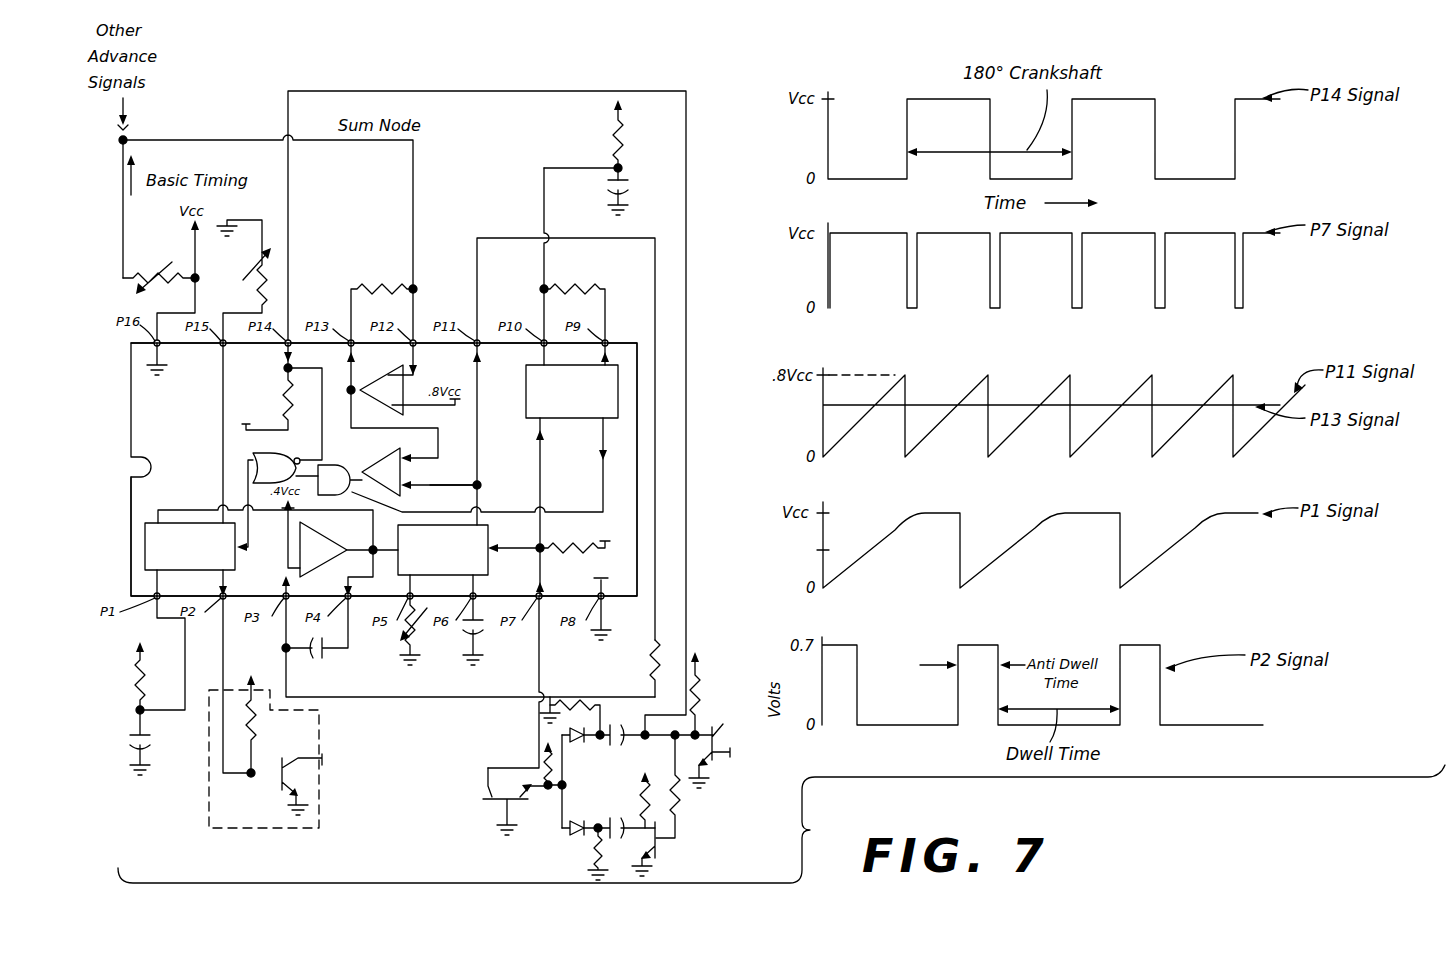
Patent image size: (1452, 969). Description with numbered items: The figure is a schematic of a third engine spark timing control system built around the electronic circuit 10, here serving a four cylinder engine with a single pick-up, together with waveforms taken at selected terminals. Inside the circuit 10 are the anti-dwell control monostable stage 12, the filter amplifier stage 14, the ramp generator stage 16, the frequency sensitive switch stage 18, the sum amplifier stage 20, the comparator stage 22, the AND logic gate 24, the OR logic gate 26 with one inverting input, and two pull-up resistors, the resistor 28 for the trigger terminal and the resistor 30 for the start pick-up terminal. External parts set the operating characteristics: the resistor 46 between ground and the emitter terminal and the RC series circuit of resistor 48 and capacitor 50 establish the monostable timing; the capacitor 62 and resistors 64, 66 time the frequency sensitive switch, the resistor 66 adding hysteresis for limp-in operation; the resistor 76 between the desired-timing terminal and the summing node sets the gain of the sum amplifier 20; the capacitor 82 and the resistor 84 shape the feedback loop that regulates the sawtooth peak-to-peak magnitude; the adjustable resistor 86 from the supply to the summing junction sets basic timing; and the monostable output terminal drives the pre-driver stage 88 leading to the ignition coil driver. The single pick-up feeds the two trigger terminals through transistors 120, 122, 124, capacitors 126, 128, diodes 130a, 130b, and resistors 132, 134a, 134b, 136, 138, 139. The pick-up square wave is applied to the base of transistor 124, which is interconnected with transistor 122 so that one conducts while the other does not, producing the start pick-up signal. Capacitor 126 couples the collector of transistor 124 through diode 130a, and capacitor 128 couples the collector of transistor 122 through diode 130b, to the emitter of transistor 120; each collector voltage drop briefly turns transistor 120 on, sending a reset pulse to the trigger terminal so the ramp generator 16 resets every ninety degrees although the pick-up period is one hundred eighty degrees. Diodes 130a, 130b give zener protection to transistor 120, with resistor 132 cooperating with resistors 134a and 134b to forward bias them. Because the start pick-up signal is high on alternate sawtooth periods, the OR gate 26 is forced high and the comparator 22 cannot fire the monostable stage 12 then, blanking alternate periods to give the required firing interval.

The electronic circuit 10 is at (131, 389).
The anti-dwell control monostable stage 12 is at (236, 560).
The filter amplifier stage 14 is at (330, 533).
The ramp generator stage 16 is at (489, 563).
The frequency sensitive switch stage 18 is at (572, 418).
The sum amplifier stage 20 is at (378, 378).
The comparator stage 22 is at (408, 479).
The AND logic gate 24 is at (332, 465).
The OR logic gate 26 is at (292, 454).
The resistor 28 is at (566, 553).
The resistor 30 is at (282, 392).
The resistor 46 is at (250, 286).
The resistor 48 is at (134, 674).
The capacitor 50 is at (130, 738).
The capacitor 62 is at (632, 194).
The resistor 64 is at (612, 140).
The resistor 66 is at (579, 284).
The resistor 76 is at (381, 284).
The capacitor 82 is at (312, 660).
The resistor 84 is at (648, 660).
The adjustable resistor 86 is at (165, 270).
The pre-driver stage 88 is at (226, 840).
The transistor 120 is at (483, 798).
The transistor 122 is at (664, 850).
The transistor 124 is at (704, 730).
The capacitor 126 is at (614, 744).
The capacitor 128 is at (618, 816).
The diode 130a is at (576, 746).
The diode 130b is at (578, 824).
The resistor 132 is at (544, 764).
The resistor 134a is at (576, 703).
The resistor 134b is at (594, 846).
The resistor 136 is at (700, 692).
The resistor 138 is at (680, 802).
The resistor 139 is at (650, 810).